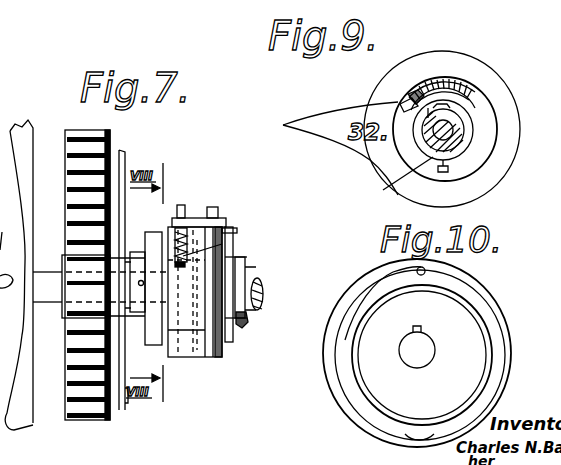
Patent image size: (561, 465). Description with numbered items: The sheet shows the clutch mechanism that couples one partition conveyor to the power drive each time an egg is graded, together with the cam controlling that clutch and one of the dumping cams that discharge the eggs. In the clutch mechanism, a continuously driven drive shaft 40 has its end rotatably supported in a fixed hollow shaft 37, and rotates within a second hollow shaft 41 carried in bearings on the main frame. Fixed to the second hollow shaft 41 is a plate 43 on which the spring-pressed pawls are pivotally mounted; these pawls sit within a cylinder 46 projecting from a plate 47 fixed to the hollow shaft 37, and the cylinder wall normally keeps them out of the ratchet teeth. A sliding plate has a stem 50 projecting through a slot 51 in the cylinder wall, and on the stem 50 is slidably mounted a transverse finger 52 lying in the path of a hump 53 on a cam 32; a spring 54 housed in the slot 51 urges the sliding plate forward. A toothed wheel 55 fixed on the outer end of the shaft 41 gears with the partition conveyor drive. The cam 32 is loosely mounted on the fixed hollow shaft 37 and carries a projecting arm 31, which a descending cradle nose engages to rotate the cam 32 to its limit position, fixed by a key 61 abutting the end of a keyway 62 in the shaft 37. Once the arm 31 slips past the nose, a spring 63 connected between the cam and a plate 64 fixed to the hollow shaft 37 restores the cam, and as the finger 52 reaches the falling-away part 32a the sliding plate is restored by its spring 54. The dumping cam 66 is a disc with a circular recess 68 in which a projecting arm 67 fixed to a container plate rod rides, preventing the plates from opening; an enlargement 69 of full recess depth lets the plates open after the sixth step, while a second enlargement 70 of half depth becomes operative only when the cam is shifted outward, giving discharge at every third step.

In FIG. 9, the projecting arm 31 is at (300, 121).
In FIG. 7, the cam 32 is at (217, 340).
In FIG. 9, the falling-away part of the cam 32a is at (472, 82).
In FIG. 7, the fixed hollow shaft 37 is at (248, 320).
In FIG. 9, the fixed hollow shaft 37 is at (392, 185).
In FIG. 7, the drive shaft 40 is at (42, 280).
In FIG. 7, the second hollow shaft 41 is at (150, 238).
In FIG. 7, the plate 43 is at (157, 338).
In FIG. 7, the cylinder 46 is at (185, 358).
In FIG. 7, the plate 47 is at (205, 359).
In FIG. 7, the stem 50 is at (182, 205).
In FIG. 7, the slot 51 is at (231, 226).
In FIG. 7, the transverse finger 52 is at (194, 220).
In FIG. 9, the hump 53 is at (408, 92).
In FIG. 7, the spring 54 is at (225, 248).
In FIG. 7, the toothed wheel 55 is at (111, 152).
In FIG. 9, the key 61 is at (418, 92).
In FIG. 9, the keyway 62 is at (402, 104).
In FIG. 7, the spring 63 is at (185, 256).
In FIG. 9, the spring 63 is at (454, 106).
In FIG. 7, the plate 64 is at (264, 292).
In FIG. 9, the plate 64 is at (406, 146).
In FIG. 10, the dumping cam 66 is at (421, 366).
In FIG. 10, the projecting arm 67 is at (428, 276).
In FIG. 10, the circular recess 68 is at (358, 388).
In FIG. 10, the enlargement 69 is at (395, 273).
In FIG. 10, the second enlargement 70 is at (408, 432).